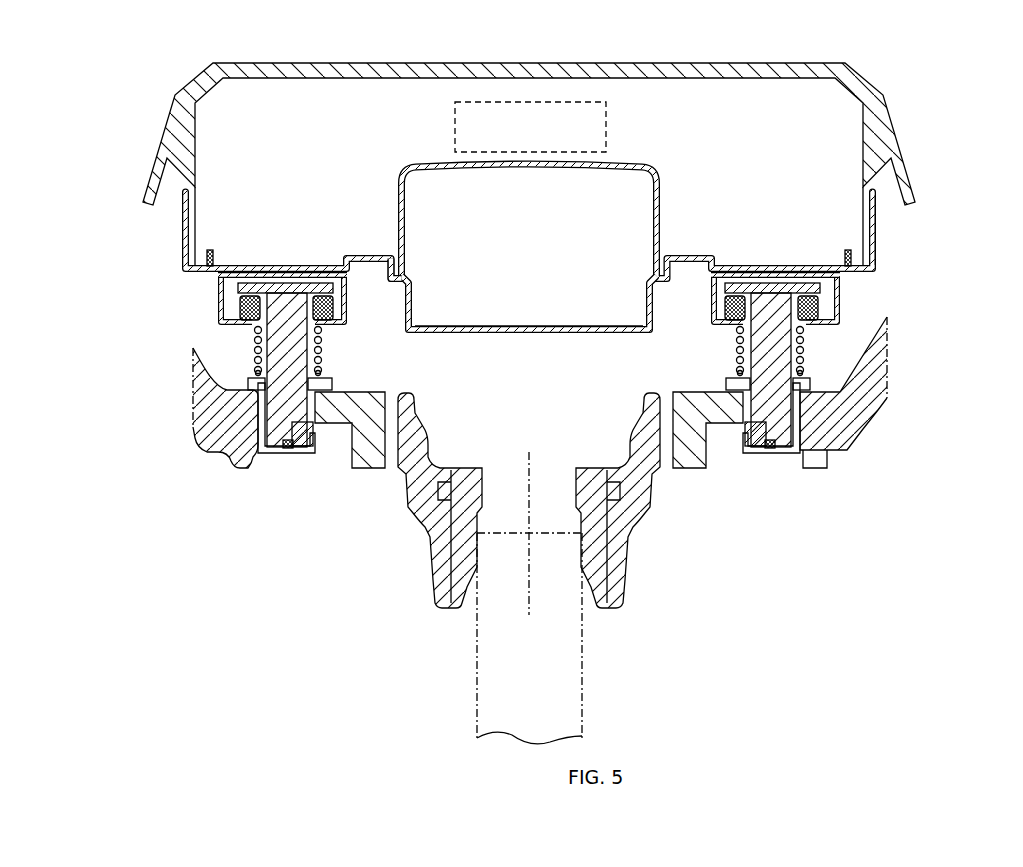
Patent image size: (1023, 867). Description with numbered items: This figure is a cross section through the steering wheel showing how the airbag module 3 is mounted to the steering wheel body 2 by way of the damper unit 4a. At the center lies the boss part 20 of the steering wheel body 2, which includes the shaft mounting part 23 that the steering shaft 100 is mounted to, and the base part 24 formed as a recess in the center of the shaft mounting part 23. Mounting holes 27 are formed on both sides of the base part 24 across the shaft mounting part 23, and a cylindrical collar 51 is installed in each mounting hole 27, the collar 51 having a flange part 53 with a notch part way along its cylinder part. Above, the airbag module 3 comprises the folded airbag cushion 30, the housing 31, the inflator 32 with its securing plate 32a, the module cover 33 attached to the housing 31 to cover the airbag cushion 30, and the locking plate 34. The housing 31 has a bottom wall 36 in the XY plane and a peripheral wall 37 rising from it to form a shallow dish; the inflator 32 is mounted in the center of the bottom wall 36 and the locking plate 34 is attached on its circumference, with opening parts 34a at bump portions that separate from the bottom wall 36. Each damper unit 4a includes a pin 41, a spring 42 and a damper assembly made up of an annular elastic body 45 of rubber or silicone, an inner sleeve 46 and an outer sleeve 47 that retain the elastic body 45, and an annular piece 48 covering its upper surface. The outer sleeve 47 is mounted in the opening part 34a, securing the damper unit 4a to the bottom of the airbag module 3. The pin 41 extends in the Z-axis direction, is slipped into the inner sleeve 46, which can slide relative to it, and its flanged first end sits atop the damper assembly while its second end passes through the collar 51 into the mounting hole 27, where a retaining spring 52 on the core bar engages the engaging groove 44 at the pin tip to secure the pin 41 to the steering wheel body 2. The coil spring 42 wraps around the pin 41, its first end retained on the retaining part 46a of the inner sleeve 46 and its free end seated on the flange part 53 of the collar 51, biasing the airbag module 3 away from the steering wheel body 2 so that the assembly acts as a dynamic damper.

The steering wheel body 2 is at (870, 433).
The airbag module 3 is at (929, 66).
The damper unit 4a is at (372, 365).
The boss part 20 is at (400, 527).
The shaft mounting part 23 is at (622, 571).
The base part 24 is at (688, 460).
The mounting hole 27 is at (312, 424).
The airbag cushion 30 is at (607, 150).
The housing 31 is at (880, 213).
The inflator 32 is at (652, 168).
The securing plate 32a is at (534, 335).
The module cover 33 is at (752, 62).
The locking plate 34 is at (351, 284).
The opening part 34a is at (335, 322).
The bottom wall 36 is at (878, 270).
The peripheral wall 37 is at (880, 238).
The pin 41 is at (266, 284).
The spring 42 is at (318, 376).
The engaging groove 44 is at (297, 446).
The elastic body 45 is at (221, 322).
The inner sleeve 46 is at (256, 362).
The retaining part 46a is at (323, 342).
The outer sleeve 47 is at (240, 303).
The annular piece 48 is at (224, 283).
The collar 51 is at (257, 432).
The retaining spring 52 is at (289, 448).
The flange part 53 is at (205, 440).
The steering shaft 100 is at (558, 698).